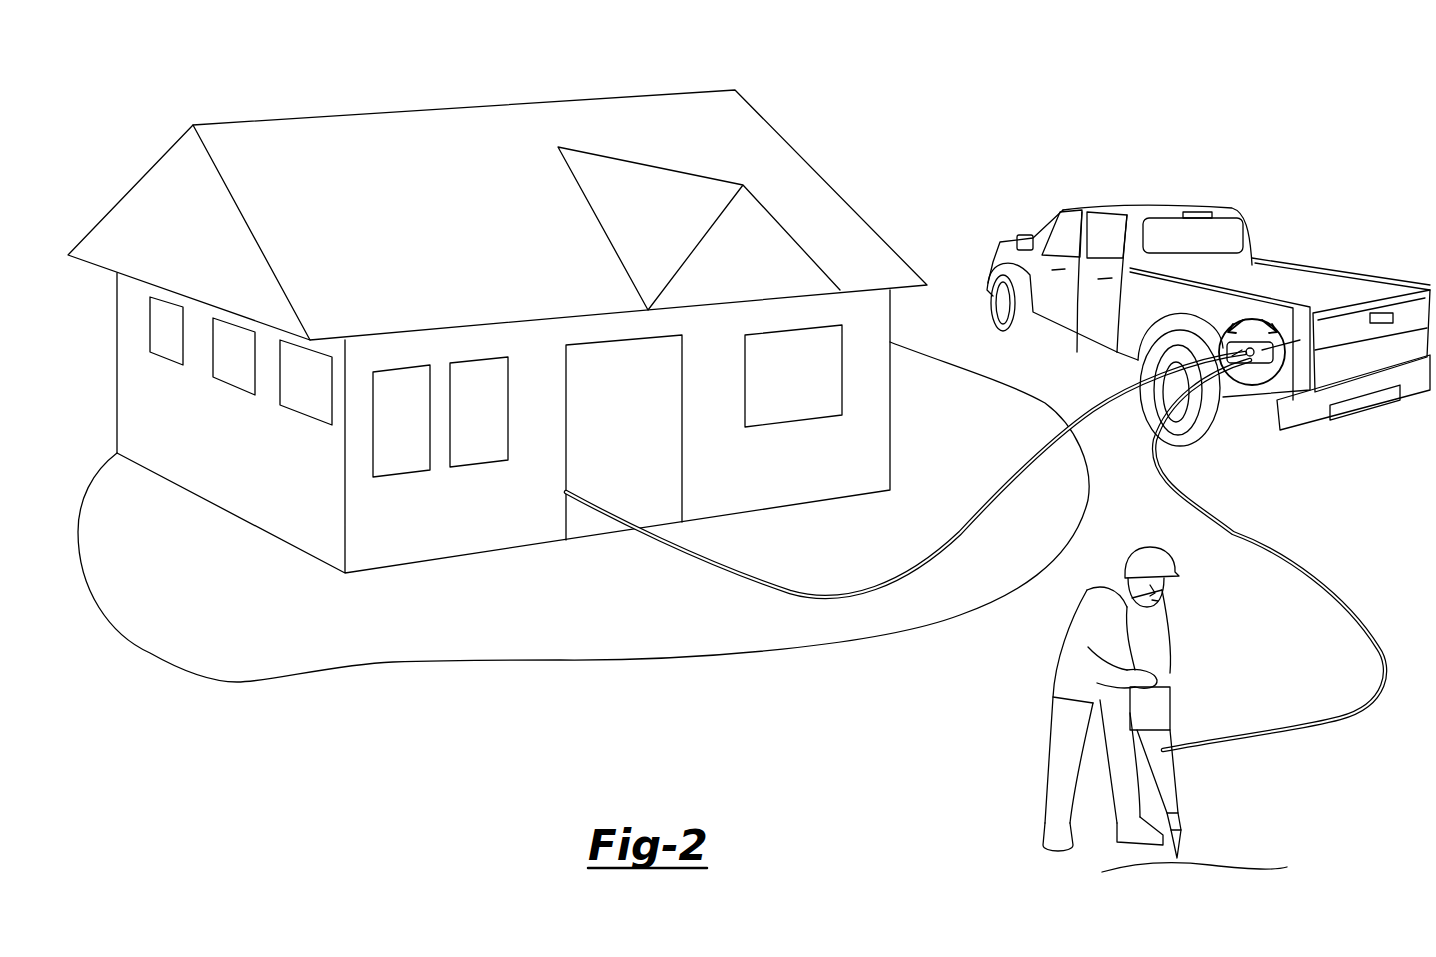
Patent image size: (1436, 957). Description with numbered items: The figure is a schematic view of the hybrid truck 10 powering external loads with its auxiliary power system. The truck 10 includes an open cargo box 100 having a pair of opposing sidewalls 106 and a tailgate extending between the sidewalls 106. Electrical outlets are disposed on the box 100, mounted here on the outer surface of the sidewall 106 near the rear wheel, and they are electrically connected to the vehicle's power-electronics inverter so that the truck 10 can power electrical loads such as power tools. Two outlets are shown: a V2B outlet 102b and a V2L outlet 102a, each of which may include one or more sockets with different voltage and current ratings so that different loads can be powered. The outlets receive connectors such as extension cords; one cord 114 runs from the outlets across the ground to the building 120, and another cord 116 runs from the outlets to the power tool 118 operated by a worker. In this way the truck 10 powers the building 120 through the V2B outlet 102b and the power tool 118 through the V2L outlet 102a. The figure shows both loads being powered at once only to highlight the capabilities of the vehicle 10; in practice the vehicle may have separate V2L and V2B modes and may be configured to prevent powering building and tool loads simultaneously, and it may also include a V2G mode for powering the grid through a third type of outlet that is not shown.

The truck 10 is at (1145, 208).
The open cargo box 100 is at (1400, 300).
The V2L outlet 102a is at (1297, 337).
The V2B outlet 102b is at (1257, 367).
The sidewall 106 is at (1257, 403).
The first power cable to building 114 is at (1012, 465).
The second power cable to tool 116 is at (1284, 556).
The power tool 118 is at (1180, 793).
The building 120 is at (420, 108).